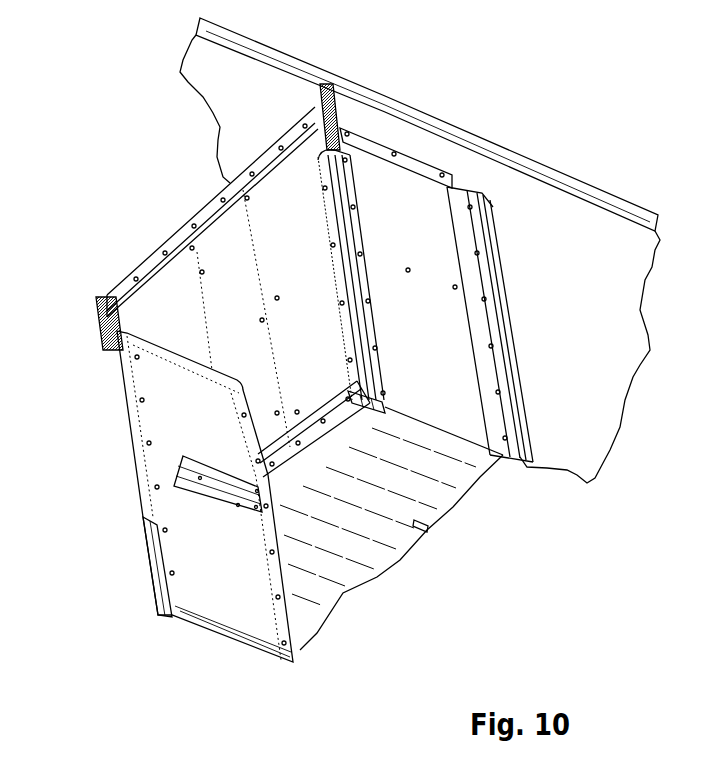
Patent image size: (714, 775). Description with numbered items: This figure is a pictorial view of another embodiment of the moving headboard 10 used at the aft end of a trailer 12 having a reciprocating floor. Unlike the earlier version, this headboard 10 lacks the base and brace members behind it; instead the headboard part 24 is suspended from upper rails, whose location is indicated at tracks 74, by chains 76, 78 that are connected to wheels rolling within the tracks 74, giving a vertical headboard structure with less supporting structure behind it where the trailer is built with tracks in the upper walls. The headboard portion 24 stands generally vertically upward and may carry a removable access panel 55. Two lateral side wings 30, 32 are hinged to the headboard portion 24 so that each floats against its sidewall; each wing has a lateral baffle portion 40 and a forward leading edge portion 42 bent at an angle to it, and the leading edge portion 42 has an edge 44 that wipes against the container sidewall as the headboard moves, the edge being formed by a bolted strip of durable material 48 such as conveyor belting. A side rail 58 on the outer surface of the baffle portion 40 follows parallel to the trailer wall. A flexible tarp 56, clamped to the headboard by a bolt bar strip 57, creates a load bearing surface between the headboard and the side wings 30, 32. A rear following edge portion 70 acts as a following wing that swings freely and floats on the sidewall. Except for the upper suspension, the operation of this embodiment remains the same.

The headboard 10 is at (148, 242).
The trailer 12 is at (607, 186).
The headboard portion 24 is at (282, 190).
The right-hand side wing 30 is at (412, 193).
The side wing 32 is at (185, 430).
The lateral baffle portion 40 is at (386, 160).
The forward leading edge portion 42 is at (482, 273).
The edge 44 is at (508, 345).
The strip of material 48 is at (535, 456).
The access panel 55 is at (238, 313).
The tarp 56 is at (425, 526).
The strip (bolt bar) 57 is at (300, 466).
The side rail 58 is at (218, 492).
The rear following edge portion 70 is at (150, 565).
The upper rails (tracks) 74 is at (522, 166).
The chain 76 is at (338, 108).
The chain 78 is at (98, 316).